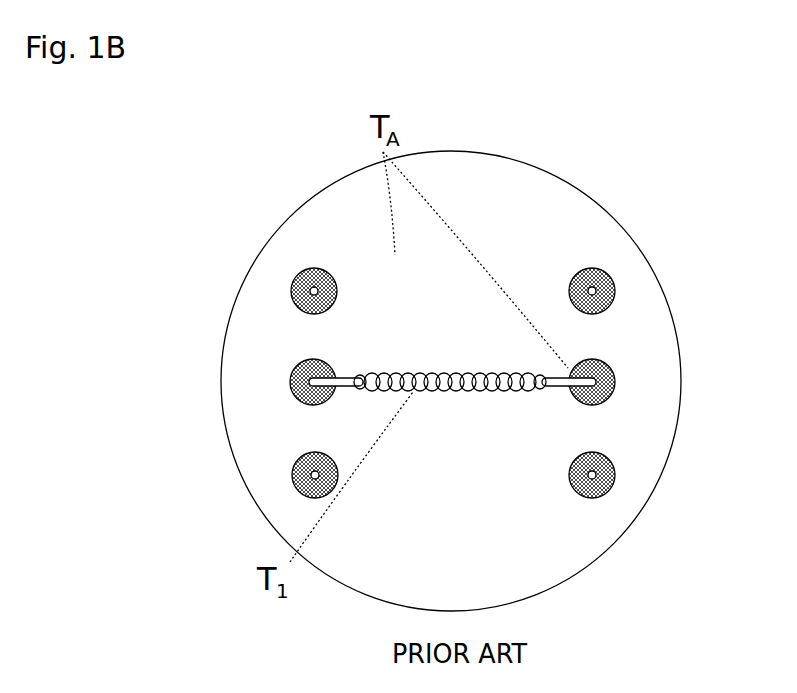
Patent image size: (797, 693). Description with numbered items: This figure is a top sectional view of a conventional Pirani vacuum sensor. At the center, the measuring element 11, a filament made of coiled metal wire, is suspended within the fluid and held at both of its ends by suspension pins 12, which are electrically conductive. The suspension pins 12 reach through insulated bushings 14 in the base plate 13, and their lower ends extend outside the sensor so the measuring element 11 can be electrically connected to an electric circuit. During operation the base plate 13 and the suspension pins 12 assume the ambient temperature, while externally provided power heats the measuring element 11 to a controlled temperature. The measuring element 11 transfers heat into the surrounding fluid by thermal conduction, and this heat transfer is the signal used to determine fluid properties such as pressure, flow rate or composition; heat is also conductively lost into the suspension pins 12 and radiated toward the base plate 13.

The measuring element 11 is at (477, 393).
The suspension pins 12 is at (350, 378).
The base plate 13 is at (578, 210).
The insulated bushings 14 is at (293, 372).